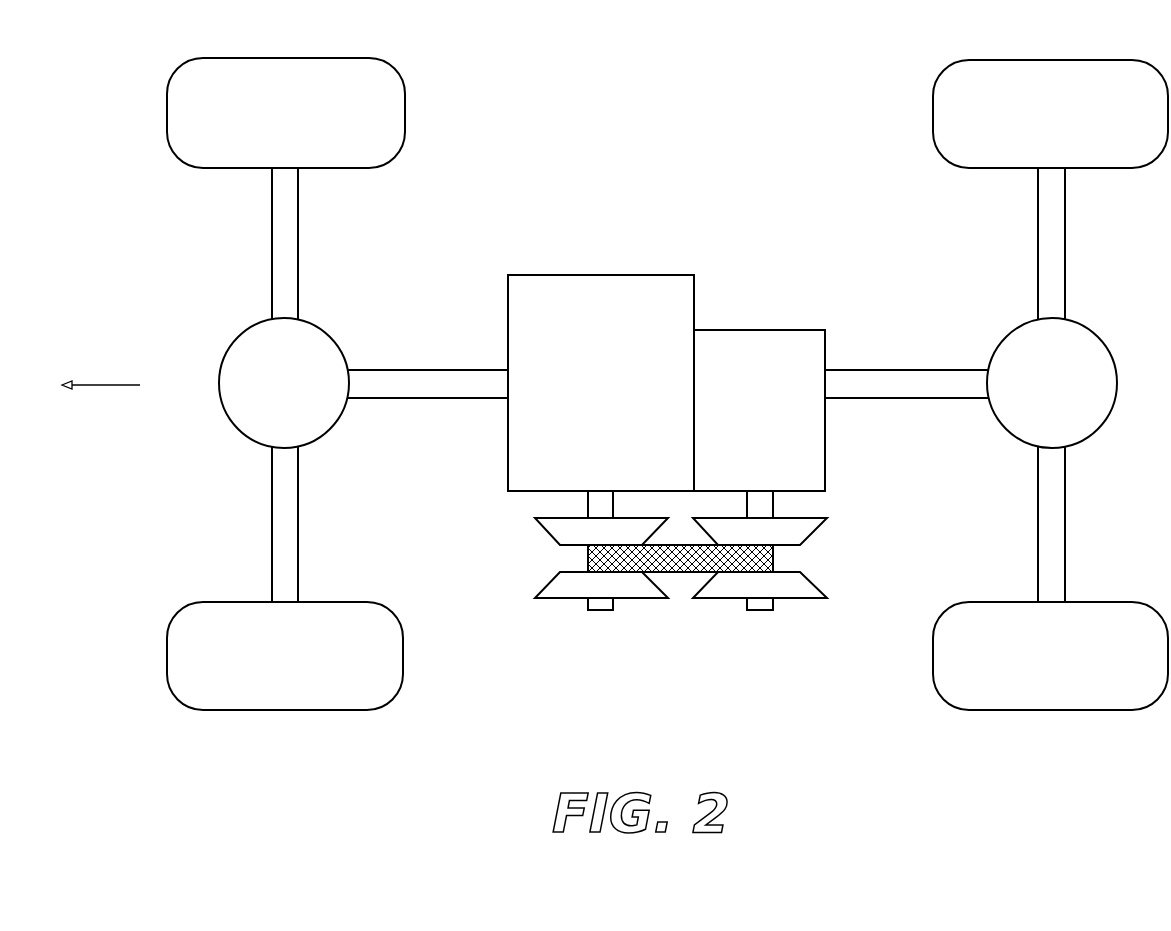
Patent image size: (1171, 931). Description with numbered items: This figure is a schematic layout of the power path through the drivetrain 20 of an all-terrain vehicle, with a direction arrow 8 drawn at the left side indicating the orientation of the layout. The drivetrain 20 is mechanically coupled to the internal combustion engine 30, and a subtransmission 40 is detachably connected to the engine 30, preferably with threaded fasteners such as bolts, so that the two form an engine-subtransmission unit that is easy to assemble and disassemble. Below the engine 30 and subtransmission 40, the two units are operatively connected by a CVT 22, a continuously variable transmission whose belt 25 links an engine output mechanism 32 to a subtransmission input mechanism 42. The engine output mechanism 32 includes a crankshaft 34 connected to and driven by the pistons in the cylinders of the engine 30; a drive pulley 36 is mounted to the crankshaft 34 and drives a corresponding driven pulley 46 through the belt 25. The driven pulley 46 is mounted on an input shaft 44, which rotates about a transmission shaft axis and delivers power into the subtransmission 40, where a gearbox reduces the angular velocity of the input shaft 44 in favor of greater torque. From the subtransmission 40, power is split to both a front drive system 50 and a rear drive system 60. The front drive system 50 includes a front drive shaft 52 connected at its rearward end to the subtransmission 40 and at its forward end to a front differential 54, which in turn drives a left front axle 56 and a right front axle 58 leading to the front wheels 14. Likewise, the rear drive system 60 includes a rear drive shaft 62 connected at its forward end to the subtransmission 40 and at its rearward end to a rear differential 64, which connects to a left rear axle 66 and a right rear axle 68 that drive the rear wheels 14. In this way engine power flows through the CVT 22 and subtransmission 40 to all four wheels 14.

The forward direction arrow 8 is at (108, 387).
The wheels 14 is at (265, 128).
The drivetrain 20 is at (712, 93).
The CVT 22 is at (678, 614).
The belt 25 is at (685, 575).
The internal combustion engine 30 is at (580, 398).
The engine output mechanism 32 is at (575, 585).
The crankshaft 34 is at (603, 612).
The drive pulley 36 is at (540, 528).
The subtransmission 40 is at (741, 423).
The subtransmission input mechanism 42 is at (783, 588).
The input shaft 44 is at (763, 612).
The driven pulley 46 is at (814, 531).
The front drive system 50 is at (437, 250).
The front drive shaft 52 is at (428, 370).
The front differential 54 is at (268, 398).
The left front axle 56 is at (299, 542).
The right front axle 58 is at (300, 255).
The rear drive system 60 is at (922, 250).
The rear drive shaft 62 is at (875, 370).
The rear differential 64 is at (1036, 398).
The left rear axle 66 is at (1066, 542).
The right rear axle 68 is at (1066, 253).